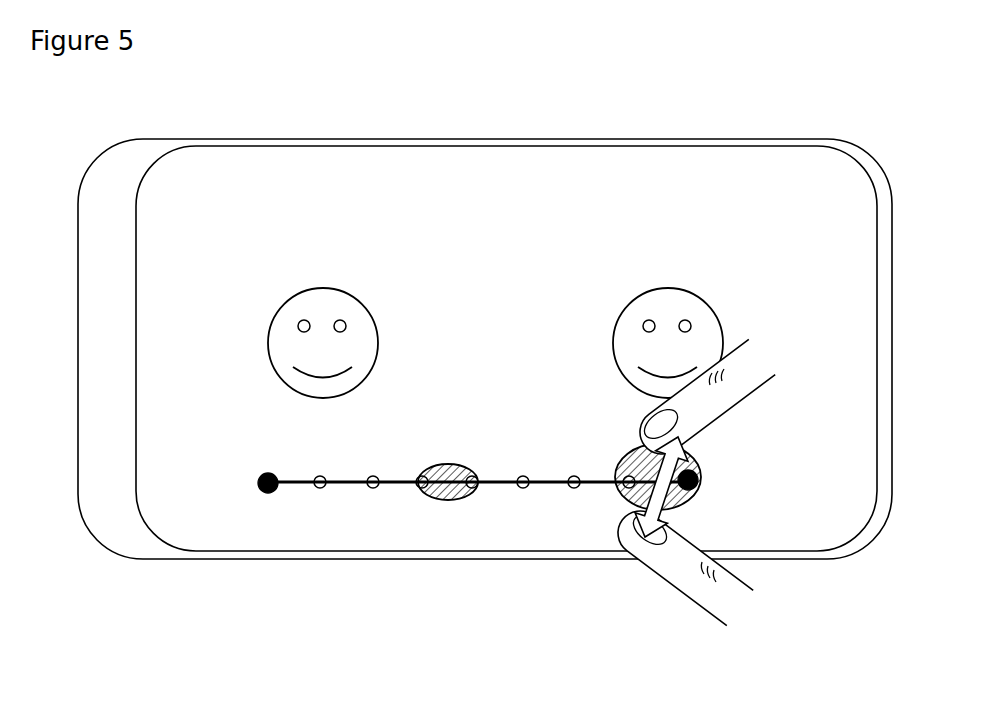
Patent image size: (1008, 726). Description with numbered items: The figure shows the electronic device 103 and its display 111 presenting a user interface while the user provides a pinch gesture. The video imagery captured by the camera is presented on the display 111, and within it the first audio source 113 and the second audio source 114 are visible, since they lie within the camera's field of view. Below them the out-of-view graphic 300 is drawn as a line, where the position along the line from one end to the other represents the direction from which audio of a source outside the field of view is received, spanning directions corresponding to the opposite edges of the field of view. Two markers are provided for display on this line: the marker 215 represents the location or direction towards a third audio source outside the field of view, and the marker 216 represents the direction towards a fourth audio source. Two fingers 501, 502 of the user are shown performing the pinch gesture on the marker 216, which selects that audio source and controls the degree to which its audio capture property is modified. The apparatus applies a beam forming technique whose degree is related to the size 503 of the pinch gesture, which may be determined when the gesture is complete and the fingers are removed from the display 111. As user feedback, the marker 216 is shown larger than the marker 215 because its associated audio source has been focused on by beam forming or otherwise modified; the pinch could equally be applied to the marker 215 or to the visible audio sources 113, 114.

The electronic device 103 is at (194, 139).
The display 111 is at (281, 160).
The first audio source 113 is at (326, 313).
The second audio source 114 is at (666, 313).
The marker 215 is at (439, 464).
The marker 216 is at (695, 500).
The out-of-view graphic 300 is at (343, 470).
The finger 501 is at (747, 388).
The finger 502 is at (688, 580).
The size of the pinch gesture 503 is at (700, 462).